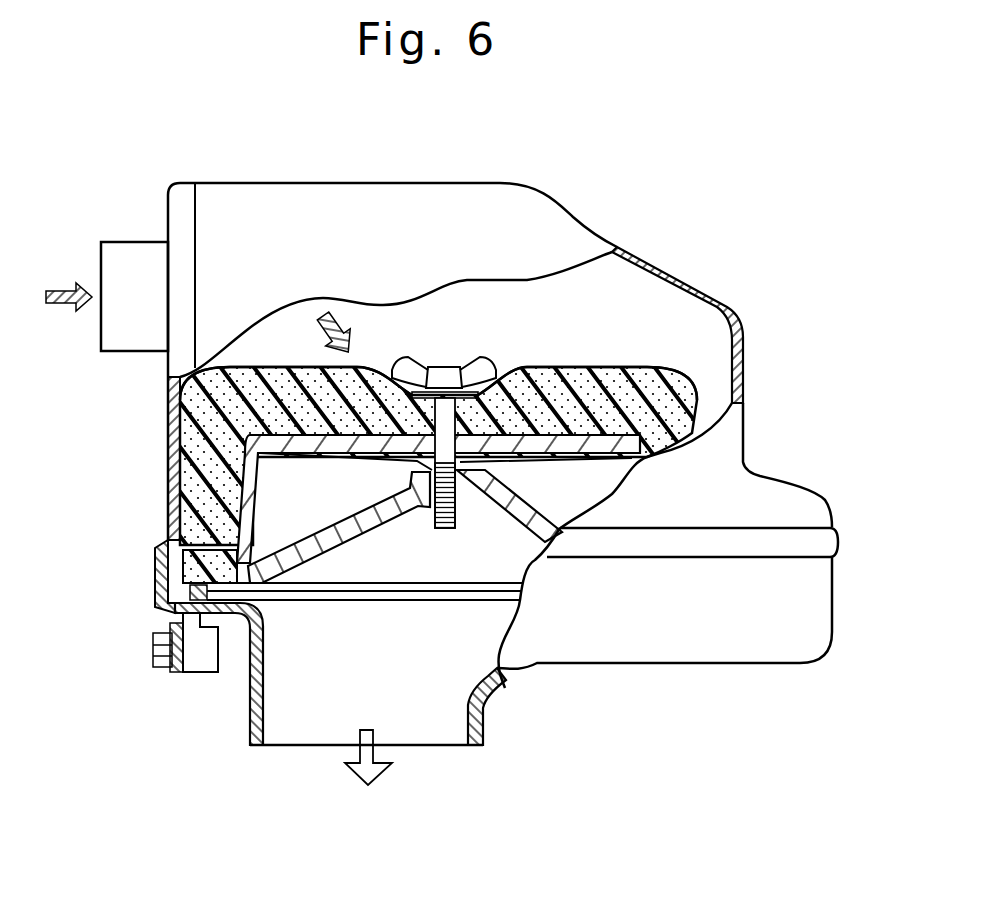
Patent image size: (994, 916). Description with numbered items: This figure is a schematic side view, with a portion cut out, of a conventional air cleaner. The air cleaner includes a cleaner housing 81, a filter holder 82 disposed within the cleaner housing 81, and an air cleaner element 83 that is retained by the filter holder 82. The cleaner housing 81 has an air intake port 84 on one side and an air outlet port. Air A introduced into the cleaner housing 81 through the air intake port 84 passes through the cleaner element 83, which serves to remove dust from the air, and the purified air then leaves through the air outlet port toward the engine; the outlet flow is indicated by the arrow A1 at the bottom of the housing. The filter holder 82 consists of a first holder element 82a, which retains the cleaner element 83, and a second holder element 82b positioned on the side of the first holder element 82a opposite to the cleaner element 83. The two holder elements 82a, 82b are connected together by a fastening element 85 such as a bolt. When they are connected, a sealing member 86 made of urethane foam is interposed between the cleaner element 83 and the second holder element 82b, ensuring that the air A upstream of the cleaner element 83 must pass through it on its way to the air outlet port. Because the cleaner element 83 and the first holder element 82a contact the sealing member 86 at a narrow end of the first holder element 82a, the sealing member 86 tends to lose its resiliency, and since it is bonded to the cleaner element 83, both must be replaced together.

The cleaner housing 81 is at (740, 310).
The filter holder 82 is at (454, 475).
The first holder element 82a is at (638, 416).
The second holder element 82b is at (548, 530).
The air cleaner element 83 is at (580, 367).
The air intake port 84 is at (133, 250).
The fastening element 85 is at (452, 365).
The sealing member 86 is at (157, 585).
The air A is at (340, 325).
The outlet air flow A1 is at (385, 753).